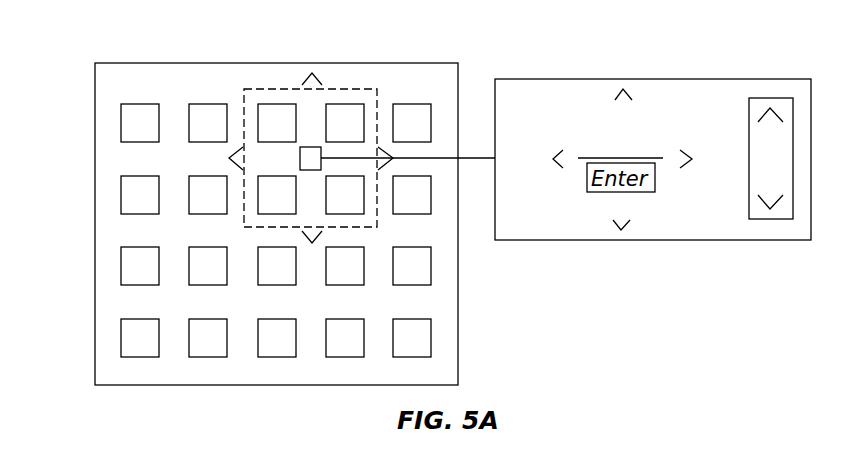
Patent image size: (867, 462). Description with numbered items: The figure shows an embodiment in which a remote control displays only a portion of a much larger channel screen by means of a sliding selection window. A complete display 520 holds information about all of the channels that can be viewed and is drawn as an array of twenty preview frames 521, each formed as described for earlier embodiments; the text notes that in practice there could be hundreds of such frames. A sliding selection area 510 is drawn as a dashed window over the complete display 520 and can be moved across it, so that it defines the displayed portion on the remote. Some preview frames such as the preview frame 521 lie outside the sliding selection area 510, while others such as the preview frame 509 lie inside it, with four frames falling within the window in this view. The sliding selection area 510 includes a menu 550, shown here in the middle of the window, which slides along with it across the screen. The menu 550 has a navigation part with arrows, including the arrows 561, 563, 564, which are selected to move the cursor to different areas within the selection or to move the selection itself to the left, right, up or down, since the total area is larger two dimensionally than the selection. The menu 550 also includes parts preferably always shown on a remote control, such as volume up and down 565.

The preview frame inside sliding area 509 is at (266, 104).
The sliding selection area 510 is at (355, 89).
The complete display 520 is at (127, 63).
The preview frame 521 is at (121, 123).
The menu 550 is at (306, 171).
The arrow 561 is at (617, 93).
The arrow 563 is at (632, 228).
The arrow 564 is at (556, 170).
The volume up and down 565 is at (749, 112).